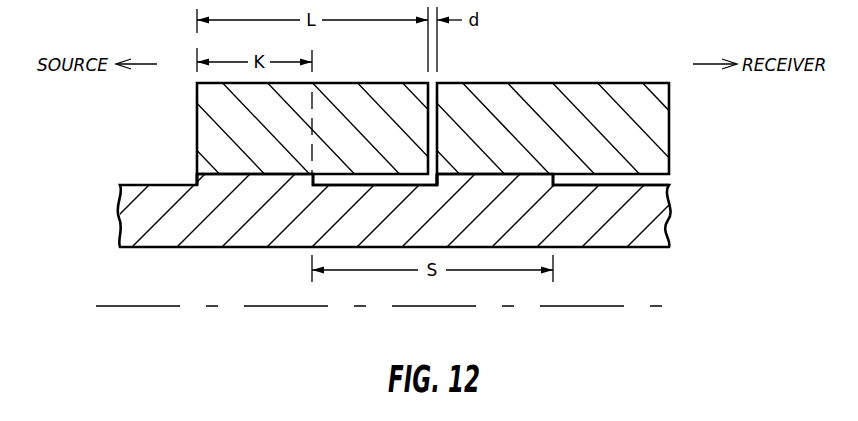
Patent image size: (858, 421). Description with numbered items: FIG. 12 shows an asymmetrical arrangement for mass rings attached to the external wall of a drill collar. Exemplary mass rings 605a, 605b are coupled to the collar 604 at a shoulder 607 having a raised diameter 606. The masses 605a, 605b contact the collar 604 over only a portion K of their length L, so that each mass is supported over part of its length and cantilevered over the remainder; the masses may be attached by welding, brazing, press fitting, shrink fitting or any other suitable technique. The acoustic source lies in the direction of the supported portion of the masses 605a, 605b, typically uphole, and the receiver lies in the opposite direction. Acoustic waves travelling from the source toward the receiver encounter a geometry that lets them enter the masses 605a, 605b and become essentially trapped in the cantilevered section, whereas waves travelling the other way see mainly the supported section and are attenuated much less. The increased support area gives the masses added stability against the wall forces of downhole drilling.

The collar 604 is at (136, 212).
The mass ring 605a is at (217, 103).
The mass ring 605b is at (644, 97).
The raised diameter 606 is at (235, 174).
The shoulder 607 is at (197, 181).